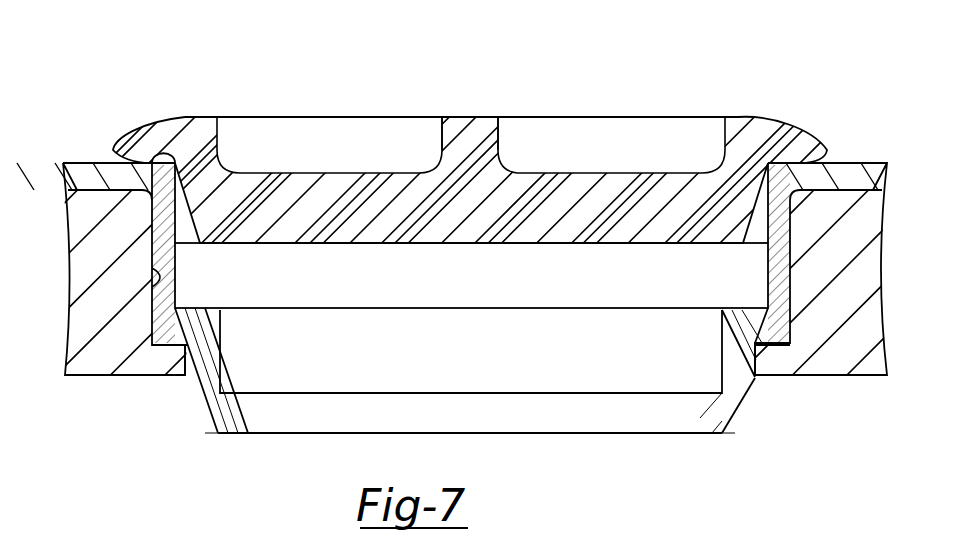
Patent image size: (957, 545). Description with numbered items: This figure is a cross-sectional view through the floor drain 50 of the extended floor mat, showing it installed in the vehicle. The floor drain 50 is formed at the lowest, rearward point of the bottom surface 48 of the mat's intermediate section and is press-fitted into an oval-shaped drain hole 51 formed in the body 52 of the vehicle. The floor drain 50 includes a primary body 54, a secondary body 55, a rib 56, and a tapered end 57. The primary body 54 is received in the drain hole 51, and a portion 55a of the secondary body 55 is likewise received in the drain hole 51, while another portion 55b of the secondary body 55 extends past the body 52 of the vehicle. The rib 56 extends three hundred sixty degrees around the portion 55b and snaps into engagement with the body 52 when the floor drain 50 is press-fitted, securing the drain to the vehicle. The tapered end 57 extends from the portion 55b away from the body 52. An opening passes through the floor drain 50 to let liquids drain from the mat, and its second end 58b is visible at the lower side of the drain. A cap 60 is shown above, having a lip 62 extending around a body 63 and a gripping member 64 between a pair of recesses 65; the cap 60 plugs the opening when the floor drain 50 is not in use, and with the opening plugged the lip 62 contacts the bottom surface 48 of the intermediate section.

The bottom surface 48 is at (75, 162).
The floor drain 50 is at (245, 453).
The drain hole 51 is at (150, 283).
The body 52 is at (838, 205).
The primary body 54 is at (180, 252).
The secondary body 55 is at (170, 355).
The portion of the secondary body 55a is at (183, 347).
The another portion of the secondary body 55b is at (185, 387).
The rib 56 is at (183, 380).
The tapered end 57 is at (208, 434).
The second end 58b is at (647, 420).
The cap 60 is at (192, 72).
The lip 62 is at (138, 133).
The body 63 is at (732, 212).
The gripping member 64 is at (450, 107).
The recesses 65 is at (315, 128).